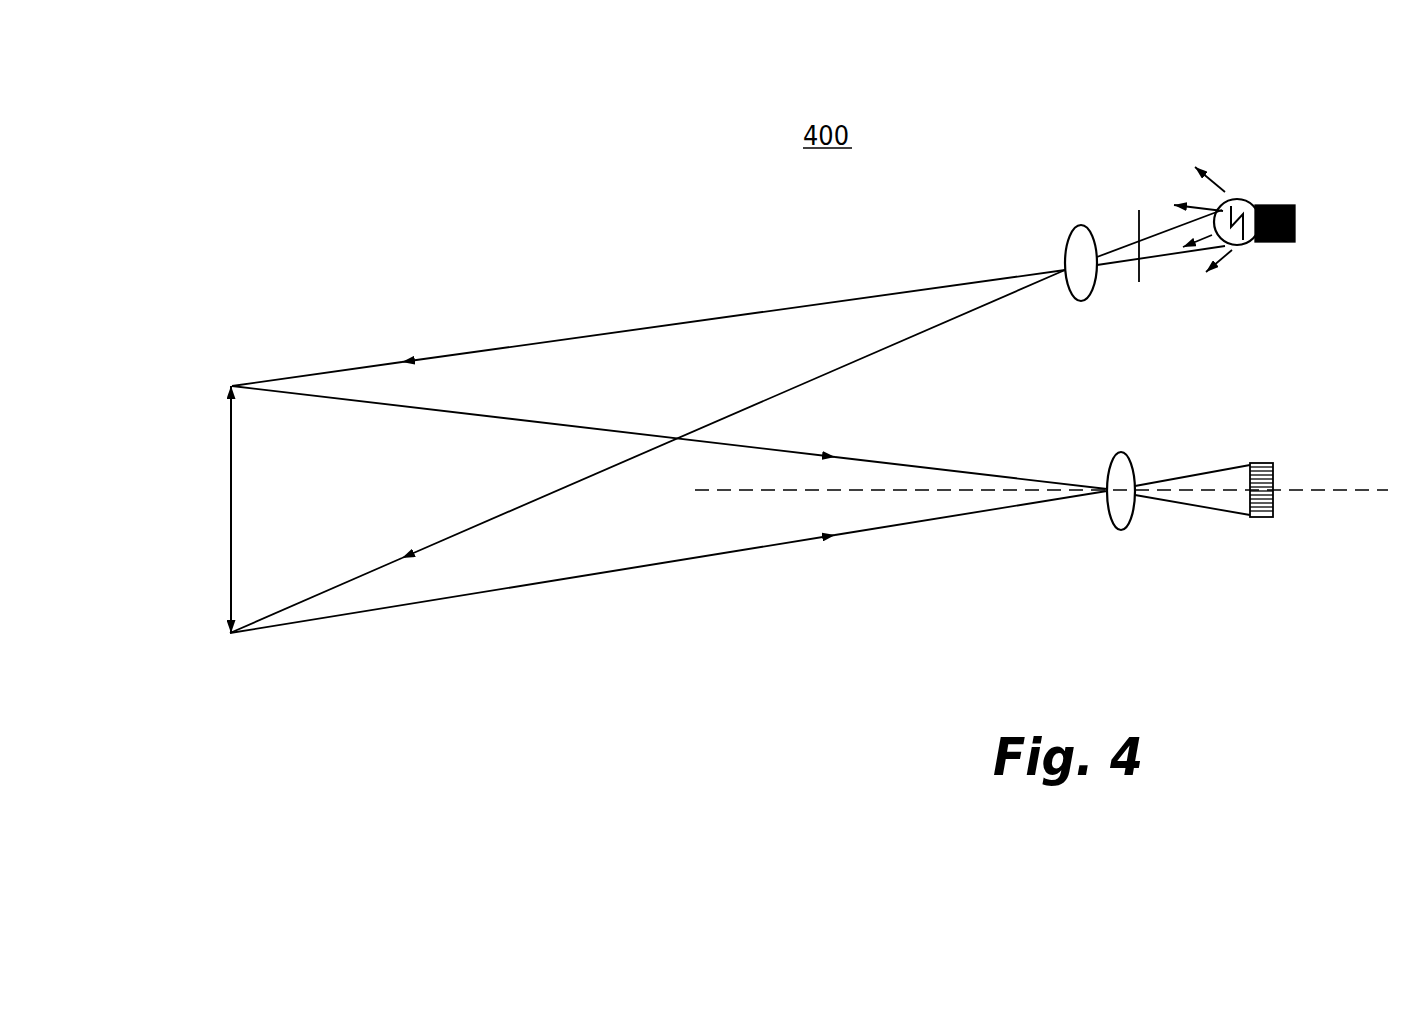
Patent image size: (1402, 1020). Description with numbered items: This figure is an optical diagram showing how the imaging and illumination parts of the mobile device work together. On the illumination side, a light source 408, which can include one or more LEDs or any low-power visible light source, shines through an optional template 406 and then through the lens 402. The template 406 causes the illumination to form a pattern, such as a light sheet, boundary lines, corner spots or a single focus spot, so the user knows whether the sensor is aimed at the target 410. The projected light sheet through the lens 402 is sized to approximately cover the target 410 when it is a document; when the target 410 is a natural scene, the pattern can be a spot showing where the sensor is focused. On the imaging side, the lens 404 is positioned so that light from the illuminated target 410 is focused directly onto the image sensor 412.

The lens 402 is at (1090, 302).
The lens 404 is at (1130, 513).
The template 406 is at (1134, 210).
The light source 408 is at (1250, 248).
The target 410 is at (230, 537).
The image sensor 412 is at (1272, 462).